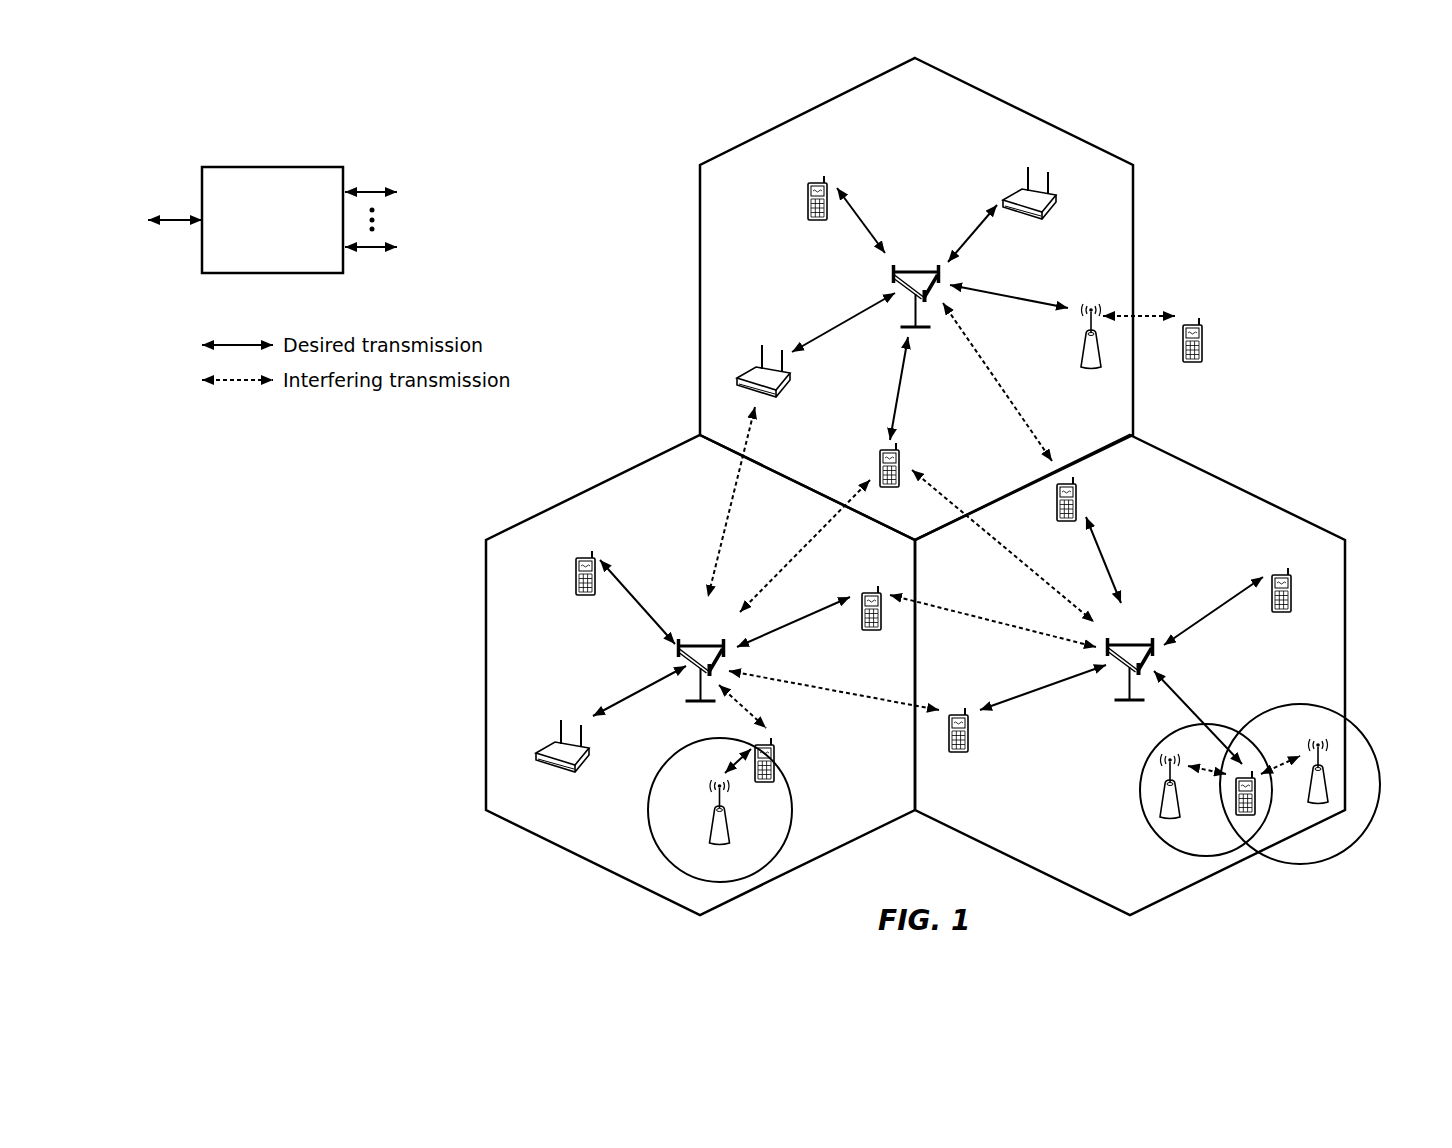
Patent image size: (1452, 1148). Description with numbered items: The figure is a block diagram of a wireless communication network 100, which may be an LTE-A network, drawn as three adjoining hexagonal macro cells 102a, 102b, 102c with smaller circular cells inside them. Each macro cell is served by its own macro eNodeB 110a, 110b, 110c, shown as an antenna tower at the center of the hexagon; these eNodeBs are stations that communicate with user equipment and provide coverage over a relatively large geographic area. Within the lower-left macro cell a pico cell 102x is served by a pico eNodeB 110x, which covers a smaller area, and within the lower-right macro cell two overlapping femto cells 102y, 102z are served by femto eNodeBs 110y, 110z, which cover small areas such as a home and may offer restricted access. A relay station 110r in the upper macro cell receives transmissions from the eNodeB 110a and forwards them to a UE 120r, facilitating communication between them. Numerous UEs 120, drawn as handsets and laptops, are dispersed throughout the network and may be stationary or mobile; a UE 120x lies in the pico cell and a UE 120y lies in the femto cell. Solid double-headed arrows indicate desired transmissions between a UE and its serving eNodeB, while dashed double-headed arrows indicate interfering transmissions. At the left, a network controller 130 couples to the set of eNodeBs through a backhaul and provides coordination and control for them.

The wireless communication network 100 is at (1277, 128).
The macro cell 102a is at (1038, 98).
The macro cell 102b is at (591, 483).
The macro cell 102c is at (1250, 471).
The pico cell 102x is at (671, 752).
The femto cell 102y is at (1140, 765).
The femto cell 102z is at (1293, 701).
The macro eNodeB 110a is at (917, 269).
The macro eNodeB 110b is at (695, 644).
The macro eNodeB 110c is at (1127, 642).
The relay station 110r is at (1082, 352).
The pico eNodeB 110x is at (729, 833).
The femto eNodeB 110y is at (1178, 812).
The femto eNodeB 110z is at (1308, 795).
The user equipment 120 is at (808, 193).
The UE served via relay 120r is at (1203, 350).
The UE in pico cell 120x is at (774, 757).
The UE in femto cell 120y is at (1236, 816).
The network controller 130 is at (269, 167).